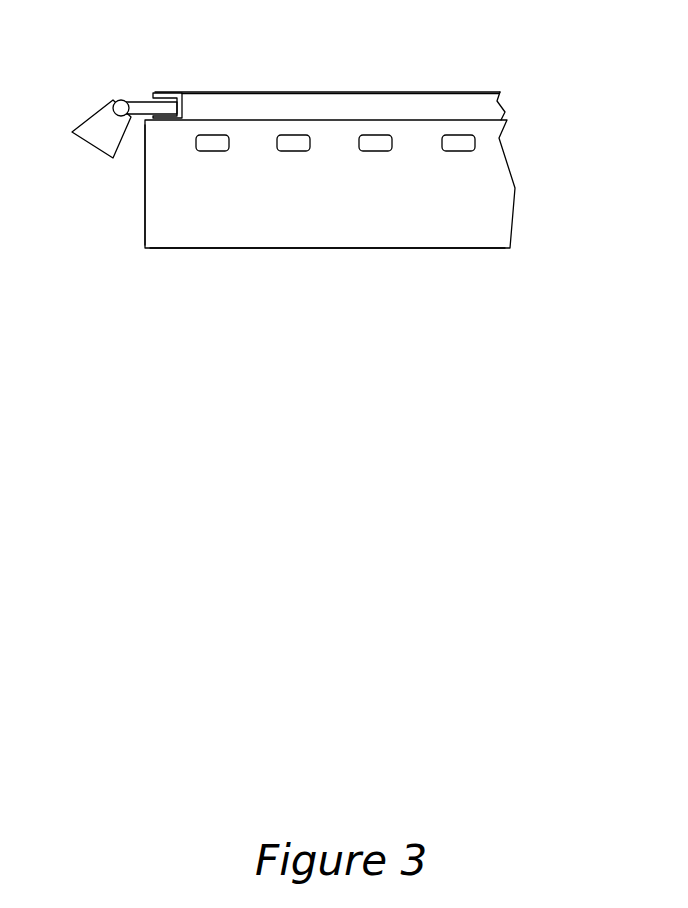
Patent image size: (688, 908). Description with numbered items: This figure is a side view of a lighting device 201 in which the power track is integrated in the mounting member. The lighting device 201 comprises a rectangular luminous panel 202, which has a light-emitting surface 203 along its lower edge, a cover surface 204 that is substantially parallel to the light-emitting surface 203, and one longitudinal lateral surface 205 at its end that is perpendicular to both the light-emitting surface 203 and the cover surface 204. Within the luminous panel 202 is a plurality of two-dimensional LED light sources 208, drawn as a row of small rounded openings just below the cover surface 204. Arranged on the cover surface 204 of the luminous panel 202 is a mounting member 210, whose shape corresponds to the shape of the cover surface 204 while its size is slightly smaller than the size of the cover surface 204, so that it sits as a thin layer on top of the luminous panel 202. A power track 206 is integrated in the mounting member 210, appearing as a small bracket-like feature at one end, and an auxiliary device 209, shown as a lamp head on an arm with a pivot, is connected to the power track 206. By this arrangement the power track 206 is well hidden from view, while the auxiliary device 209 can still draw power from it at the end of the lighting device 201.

The lighting device 201 is at (546, 155).
The luminous panel 202 is at (456, 237).
The light-emitting surface 203 is at (227, 250).
The cover surface 204 is at (470, 92).
The longitudinal lateral surface 205 is at (140, 207).
The power track 206 is at (180, 92).
The 2D LED light sources 208 is at (372, 135).
The auxiliary device 209 is at (100, 136).
The mounting member 210 is at (413, 110).